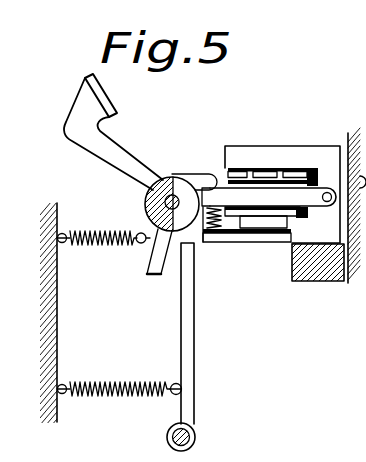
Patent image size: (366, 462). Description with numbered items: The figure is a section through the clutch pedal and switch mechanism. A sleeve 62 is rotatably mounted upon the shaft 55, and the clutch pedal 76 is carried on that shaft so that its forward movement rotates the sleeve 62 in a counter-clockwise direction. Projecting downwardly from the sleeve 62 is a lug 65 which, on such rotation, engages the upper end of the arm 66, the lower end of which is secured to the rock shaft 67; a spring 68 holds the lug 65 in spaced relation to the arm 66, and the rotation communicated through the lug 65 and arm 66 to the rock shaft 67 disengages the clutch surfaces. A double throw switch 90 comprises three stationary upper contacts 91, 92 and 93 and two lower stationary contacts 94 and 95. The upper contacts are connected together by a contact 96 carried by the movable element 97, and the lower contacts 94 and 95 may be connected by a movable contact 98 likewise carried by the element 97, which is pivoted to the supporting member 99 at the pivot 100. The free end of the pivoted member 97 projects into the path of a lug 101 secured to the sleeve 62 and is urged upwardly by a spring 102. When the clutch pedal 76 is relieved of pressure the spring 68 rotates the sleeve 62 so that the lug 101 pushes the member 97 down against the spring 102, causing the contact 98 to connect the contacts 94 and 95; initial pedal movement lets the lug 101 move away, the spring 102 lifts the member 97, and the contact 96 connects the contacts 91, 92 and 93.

The shaft 55 is at (148, 193).
The sleeve 62 is at (170, 274).
The lug 65 is at (147, 269).
The arm 66 is at (196, 306).
The rock shaft 67 is at (196, 437).
The spring 68 is at (98, 232).
The clutch pedal 76 is at (90, 115).
The double throw switch 90 is at (320, 162).
The upper stationary contact 91 is at (238, 168).
The upper stationary contact 92 is at (268, 168).
The upper stationary contact 93 is at (298, 168).
The lower stationary contact 94 is at (266, 230).
The lower stationary contact 95 is at (291, 224).
The contact 96 is at (225, 187).
The movable element 97 is at (307, 209).
The movable contact 98 is at (282, 242).
The supporting member 99 is at (330, 228).
The pivot 100 is at (312, 199).
The lug 101 is at (196, 175).
The spring 102 is at (243, 236).